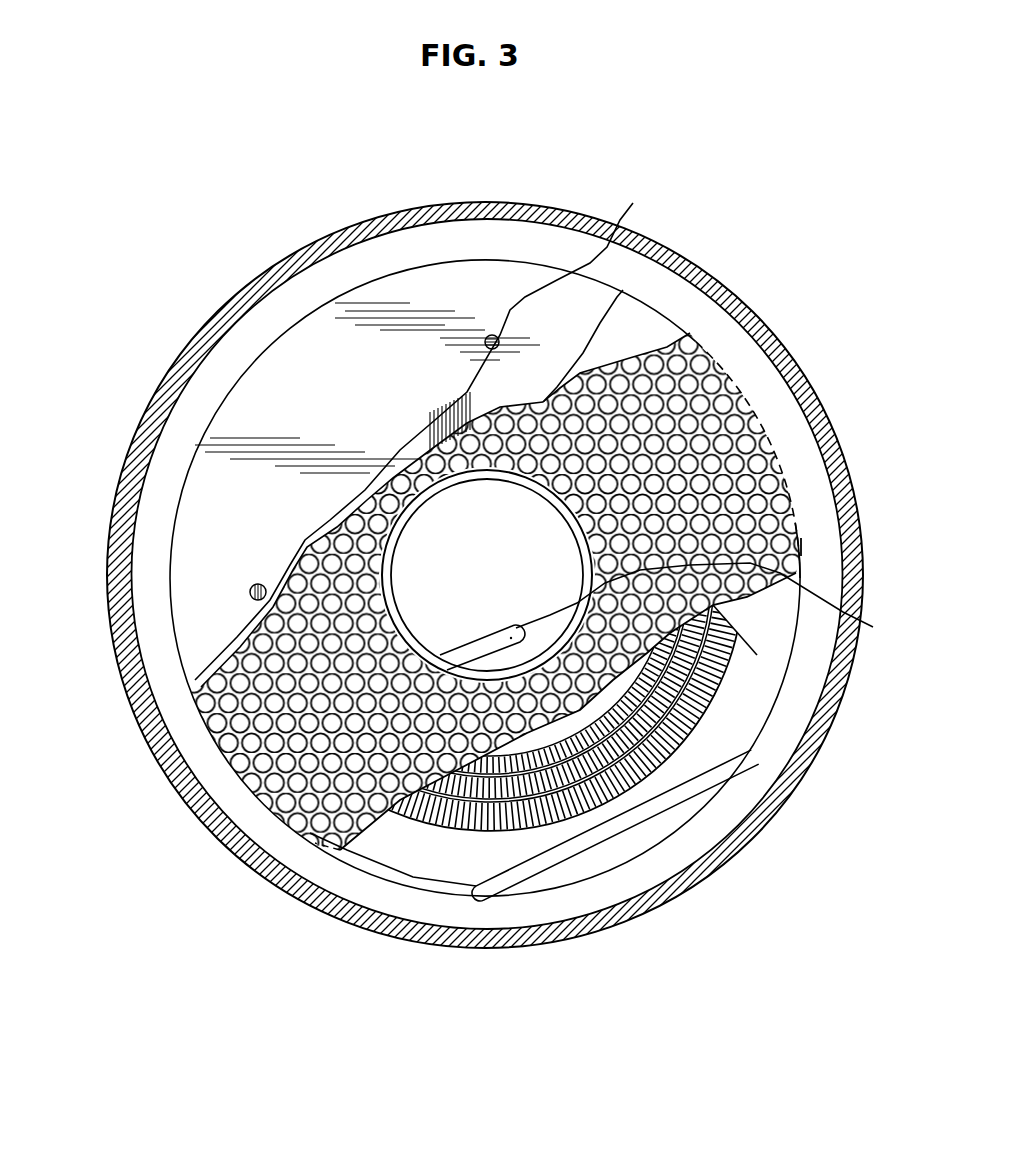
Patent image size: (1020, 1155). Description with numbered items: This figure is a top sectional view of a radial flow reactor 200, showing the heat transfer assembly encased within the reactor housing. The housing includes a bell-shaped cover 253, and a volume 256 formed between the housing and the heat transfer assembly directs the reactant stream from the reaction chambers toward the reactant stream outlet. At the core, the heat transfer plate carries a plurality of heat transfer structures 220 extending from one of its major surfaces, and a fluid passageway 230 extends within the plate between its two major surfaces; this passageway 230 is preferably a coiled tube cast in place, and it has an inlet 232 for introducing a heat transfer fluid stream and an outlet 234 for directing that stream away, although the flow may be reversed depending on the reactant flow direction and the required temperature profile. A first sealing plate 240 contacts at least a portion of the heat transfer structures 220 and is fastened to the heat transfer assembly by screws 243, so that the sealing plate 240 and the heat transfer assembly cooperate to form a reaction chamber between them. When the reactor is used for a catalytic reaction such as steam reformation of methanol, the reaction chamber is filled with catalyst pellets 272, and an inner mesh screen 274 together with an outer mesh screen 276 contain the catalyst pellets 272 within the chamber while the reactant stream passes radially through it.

The radial flow reactor 200 is at (209, 295).
The heat transfer structures 220 is at (342, 847).
The fluid passageway 230 is at (700, 733).
The inlet 232 is at (719, 602).
The outlet 234 is at (497, 903).
The first sealing plate 240 is at (480, 283).
The screws 243 is at (78, 592).
The bell-shaped cover 253 is at (806, 358).
The volume 256 is at (800, 462).
The catalyst pellets 272 is at (228, 737).
The inner mesh screen 274 is at (613, 337).
The outer mesh screen 276 is at (803, 548).